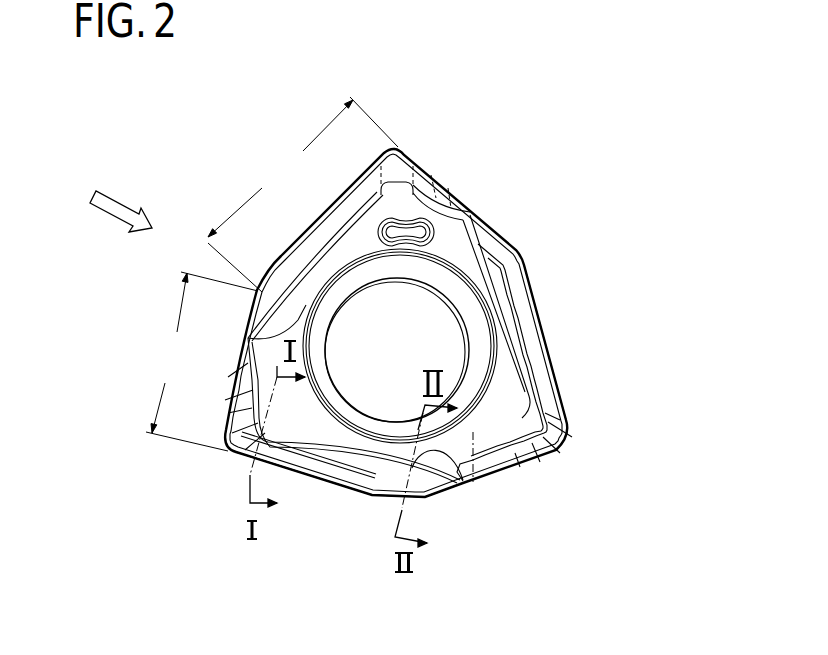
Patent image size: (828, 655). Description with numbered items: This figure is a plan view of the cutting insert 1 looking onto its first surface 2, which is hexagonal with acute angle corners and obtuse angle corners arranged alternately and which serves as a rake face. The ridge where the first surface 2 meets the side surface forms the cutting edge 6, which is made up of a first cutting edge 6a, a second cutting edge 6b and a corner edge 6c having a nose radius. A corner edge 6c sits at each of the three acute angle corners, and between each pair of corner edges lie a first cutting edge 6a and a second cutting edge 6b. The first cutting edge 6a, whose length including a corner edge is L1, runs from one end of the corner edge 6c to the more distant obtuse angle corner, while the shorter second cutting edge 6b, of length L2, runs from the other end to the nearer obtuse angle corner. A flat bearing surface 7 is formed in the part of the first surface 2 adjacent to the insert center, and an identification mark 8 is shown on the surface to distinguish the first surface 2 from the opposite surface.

The cutting insert 1 is at (587, 363).
The first surface 2 is at (521, 404).
The cutting edge 6 is at (353, 487).
The first cutting edge 6a is at (322, 483).
The second cutting edge 6b is at (225, 418).
The corner edge 6c is at (231, 452).
The bearing surface 7 is at (473, 440).
The identification mark 8 is at (432, 237).